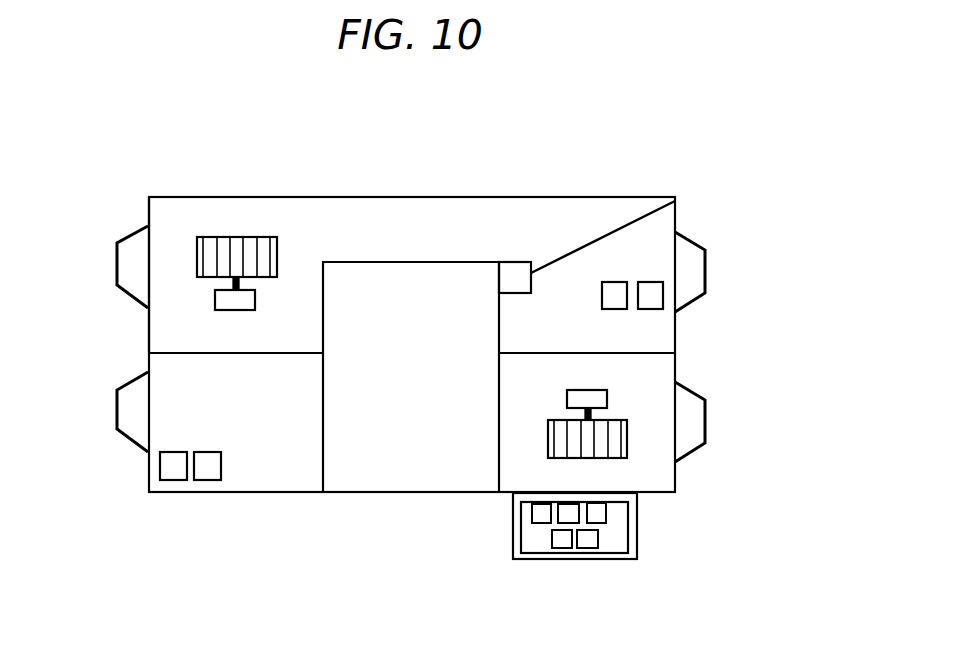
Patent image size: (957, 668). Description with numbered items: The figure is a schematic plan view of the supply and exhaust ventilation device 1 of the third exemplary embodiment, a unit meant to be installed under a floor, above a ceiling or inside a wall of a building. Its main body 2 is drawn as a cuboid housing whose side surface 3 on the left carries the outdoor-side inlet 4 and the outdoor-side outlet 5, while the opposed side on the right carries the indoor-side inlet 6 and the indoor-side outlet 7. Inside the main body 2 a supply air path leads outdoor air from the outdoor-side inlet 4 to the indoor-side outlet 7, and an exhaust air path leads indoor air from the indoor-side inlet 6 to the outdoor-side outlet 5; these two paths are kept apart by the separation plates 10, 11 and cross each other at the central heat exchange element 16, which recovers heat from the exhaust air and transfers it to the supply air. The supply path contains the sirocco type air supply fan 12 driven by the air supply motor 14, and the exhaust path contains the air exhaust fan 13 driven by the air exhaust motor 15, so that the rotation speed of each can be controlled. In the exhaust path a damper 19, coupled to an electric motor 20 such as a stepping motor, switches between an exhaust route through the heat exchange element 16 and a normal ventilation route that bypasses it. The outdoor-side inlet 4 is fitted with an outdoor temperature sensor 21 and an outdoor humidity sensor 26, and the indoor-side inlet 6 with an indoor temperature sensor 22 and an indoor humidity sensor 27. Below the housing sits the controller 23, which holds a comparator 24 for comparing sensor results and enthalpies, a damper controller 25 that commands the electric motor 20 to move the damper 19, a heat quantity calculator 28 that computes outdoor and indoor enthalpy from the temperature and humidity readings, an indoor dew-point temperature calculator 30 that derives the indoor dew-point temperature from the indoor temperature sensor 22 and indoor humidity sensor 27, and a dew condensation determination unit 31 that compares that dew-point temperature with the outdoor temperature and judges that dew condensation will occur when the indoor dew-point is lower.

The supply and exhaust ventilation device 1 is at (472, 112).
The main body 2 is at (230, 197).
The side surface 3 is at (148, 203).
The outdoor-side inlet 4 is at (138, 418).
The outdoor-side outlet 5 is at (132, 263).
The indoor-side inlet 6 is at (688, 253).
The indoor-side outlet 7 is at (685, 443).
The separation plate 10 is at (213, 353).
The separation plate 11 is at (543, 356).
The air supply fan 12 is at (615, 446).
The air exhaust fan 13 is at (251, 245).
The air supply motor 14 is at (607, 398).
The air exhaust motor 15 is at (215, 300).
The heat exchange element 16 is at (365, 447).
The damper 19 is at (612, 230).
The electric motor 20 is at (515, 275).
The outdoor temperature sensor 21 is at (173, 470).
The indoor temperature sensor 22 is at (652, 297).
The controller 23 is at (618, 523).
The comparator 24 is at (543, 513).
The damper controller 25 is at (598, 512).
The outdoor humidity sensor 26 is at (210, 470).
The indoor humidity sensor 27 is at (617, 297).
The heat quantity calculator 28 is at (568, 512).
The indoor dew-point temperature calculator 30 is at (588, 542).
The dew condensation determination unit 31 is at (553, 540).